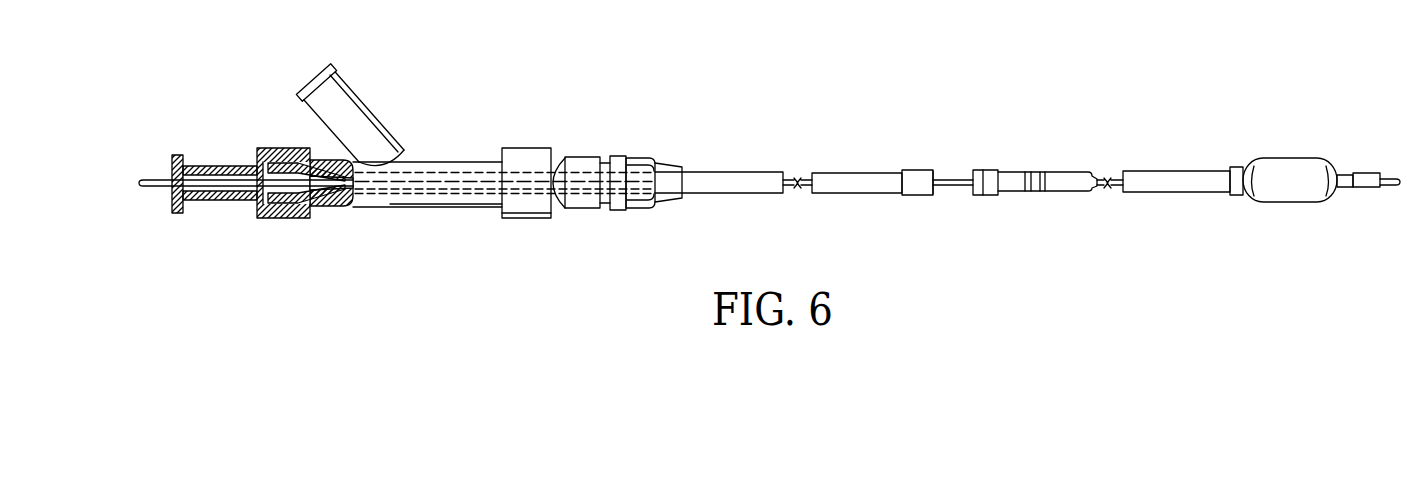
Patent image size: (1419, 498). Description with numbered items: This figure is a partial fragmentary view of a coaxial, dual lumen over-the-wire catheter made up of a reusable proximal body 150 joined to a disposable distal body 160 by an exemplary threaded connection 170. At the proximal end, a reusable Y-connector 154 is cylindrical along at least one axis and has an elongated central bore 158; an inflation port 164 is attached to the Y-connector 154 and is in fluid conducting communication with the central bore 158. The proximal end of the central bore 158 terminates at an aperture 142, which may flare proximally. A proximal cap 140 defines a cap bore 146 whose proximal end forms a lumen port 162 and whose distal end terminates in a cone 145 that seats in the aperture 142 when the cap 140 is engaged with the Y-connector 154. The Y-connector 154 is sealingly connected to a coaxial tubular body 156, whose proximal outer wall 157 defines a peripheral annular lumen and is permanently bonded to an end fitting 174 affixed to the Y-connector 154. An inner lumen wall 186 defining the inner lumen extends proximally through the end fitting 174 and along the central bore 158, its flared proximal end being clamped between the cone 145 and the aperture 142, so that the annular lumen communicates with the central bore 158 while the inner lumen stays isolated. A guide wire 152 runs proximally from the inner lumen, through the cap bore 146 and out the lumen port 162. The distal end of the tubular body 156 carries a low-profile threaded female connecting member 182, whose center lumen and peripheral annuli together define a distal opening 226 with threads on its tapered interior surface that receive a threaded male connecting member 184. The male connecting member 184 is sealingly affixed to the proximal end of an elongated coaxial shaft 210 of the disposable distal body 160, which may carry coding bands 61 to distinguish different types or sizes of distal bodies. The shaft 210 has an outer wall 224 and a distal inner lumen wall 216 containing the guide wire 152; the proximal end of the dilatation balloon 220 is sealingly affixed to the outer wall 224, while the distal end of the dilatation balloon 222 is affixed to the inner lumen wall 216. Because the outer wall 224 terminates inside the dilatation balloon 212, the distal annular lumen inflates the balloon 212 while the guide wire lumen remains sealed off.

The coding bands 61 is at (1042, 171).
The proximal cap 140 is at (257, 155).
The aperture 142 is at (323, 207).
The cone 145 is at (276, 163).
The cap bore 146 is at (227, 200).
The reusable proximal body 150 is at (712, 137).
The guide wire 152 is at (159, 190).
The Y-connector 154 is at (408, 143).
The coaxial tubular body 156 is at (718, 195).
The proximal outer wall 157 is at (748, 172).
The central bore 158 is at (467, 202).
The disposable distal body 160 is at (1255, 170).
The lumen port 162 is at (173, 177).
The inflation port 164 is at (357, 93).
The connection 170 is at (945, 184).
The end fitting 174 is at (647, 158).
The female connecting member 182 is at (903, 195).
The male connecting member 184 is at (990, 195).
The inner lumen wall 186 is at (440, 168).
The coaxial shaft 210 is at (1055, 182).
The dilatation balloon 212 is at (1280, 158).
The distal inner lumen wall 216 is at (1362, 173).
The proximal end of dilatation balloon 220 is at (1237, 195).
The distal end of dilatation balloon 222 is at (1342, 187).
The outer wall 224 is at (1133, 192).
The distal opening 226 is at (937, 195).